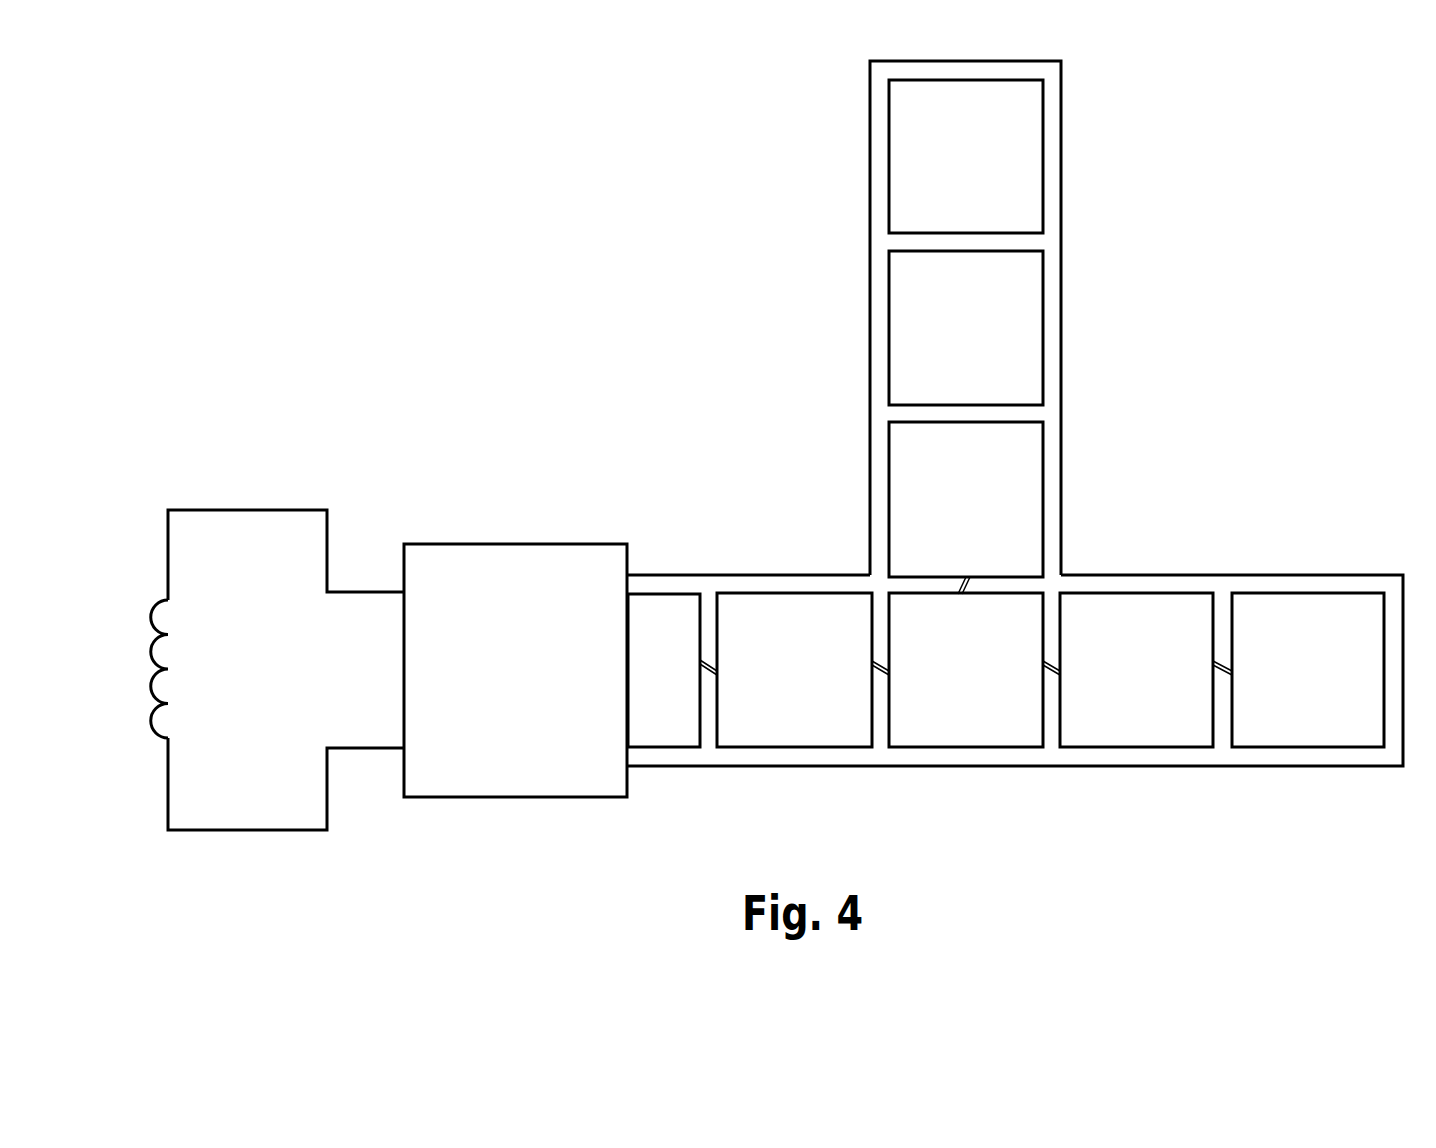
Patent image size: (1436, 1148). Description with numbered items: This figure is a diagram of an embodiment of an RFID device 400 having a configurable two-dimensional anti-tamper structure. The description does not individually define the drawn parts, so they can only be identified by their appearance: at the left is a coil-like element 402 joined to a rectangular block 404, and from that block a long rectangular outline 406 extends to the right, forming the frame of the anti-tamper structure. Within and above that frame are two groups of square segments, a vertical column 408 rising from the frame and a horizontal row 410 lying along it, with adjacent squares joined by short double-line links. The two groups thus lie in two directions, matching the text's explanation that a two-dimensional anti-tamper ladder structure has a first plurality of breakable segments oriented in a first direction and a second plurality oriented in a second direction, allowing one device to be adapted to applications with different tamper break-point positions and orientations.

The antenna system 400 is at (226, 425).
The inductor / source block 402 is at (250, 800).
The matching network block 404 is at (495, 544).
The transmission line outline 406 is at (667, 575).
The vertical column of radiating elements 408 is at (836, 62).
The horizontal row of radiating elements 410 is at (1417, 783).